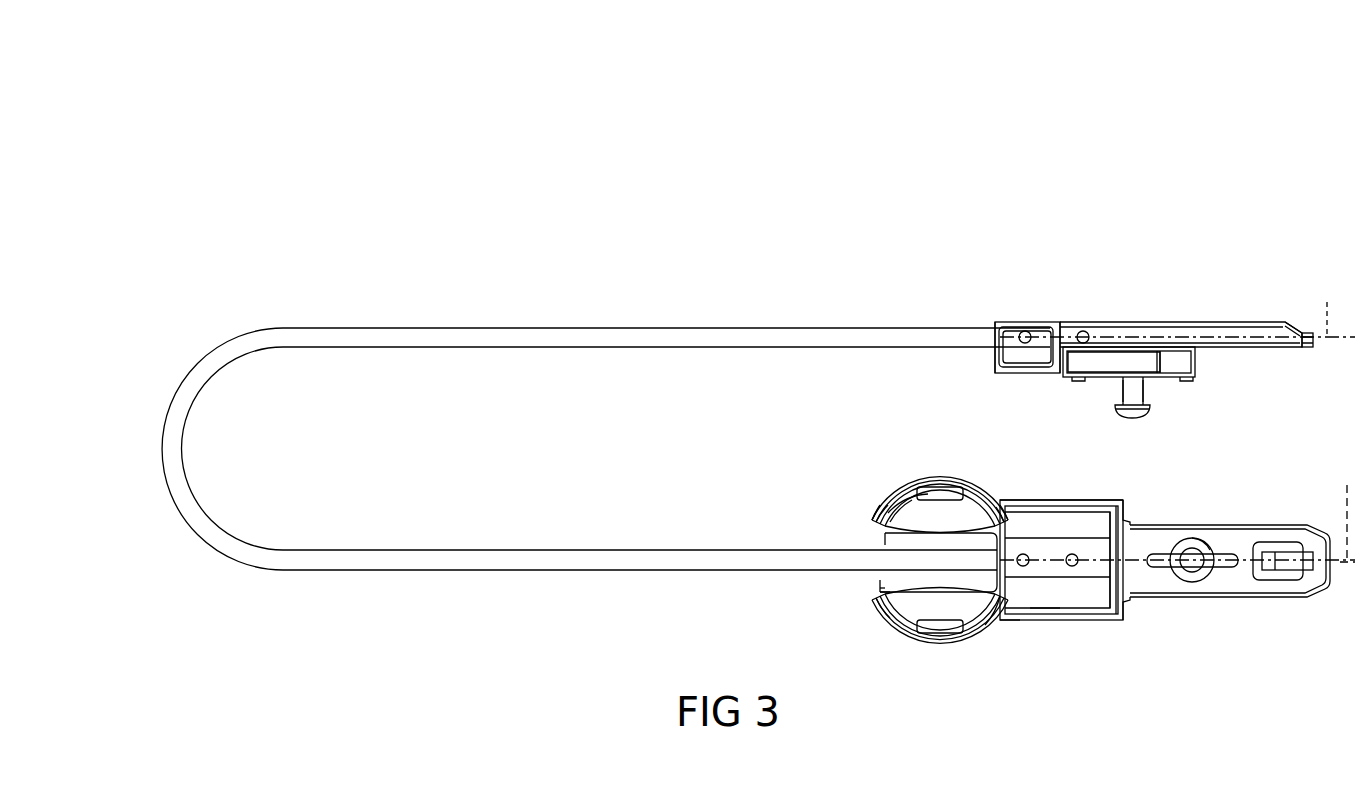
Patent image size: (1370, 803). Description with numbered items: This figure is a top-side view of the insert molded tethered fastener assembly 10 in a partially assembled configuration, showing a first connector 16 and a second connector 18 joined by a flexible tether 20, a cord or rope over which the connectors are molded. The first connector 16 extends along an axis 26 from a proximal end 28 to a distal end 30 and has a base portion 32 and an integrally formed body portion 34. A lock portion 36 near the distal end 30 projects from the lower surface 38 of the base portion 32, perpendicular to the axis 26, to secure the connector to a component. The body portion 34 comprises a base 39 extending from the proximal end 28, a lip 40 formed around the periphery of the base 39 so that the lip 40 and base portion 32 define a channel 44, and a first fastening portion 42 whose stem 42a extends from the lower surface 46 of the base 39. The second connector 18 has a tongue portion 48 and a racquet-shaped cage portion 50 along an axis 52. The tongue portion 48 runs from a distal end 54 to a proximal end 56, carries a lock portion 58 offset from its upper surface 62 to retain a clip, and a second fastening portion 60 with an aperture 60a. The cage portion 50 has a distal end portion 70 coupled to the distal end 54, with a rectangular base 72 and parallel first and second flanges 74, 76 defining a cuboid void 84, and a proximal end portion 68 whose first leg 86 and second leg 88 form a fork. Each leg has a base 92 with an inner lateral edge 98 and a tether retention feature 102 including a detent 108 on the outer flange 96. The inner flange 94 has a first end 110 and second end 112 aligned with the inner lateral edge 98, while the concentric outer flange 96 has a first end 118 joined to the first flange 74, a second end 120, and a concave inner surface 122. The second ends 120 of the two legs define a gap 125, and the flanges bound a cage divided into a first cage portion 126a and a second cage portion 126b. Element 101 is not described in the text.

The tethered fastener assembly 10 is at (1100, 208).
The first connector 16 is at (1148, 341).
The second connector 18 is at (1056, 566).
The tether 20 is at (227, 575).
The axis 26 is at (1333, 297).
The proximal end 28 is at (992, 358).
The distal end 30 is at (1315, 341).
The base portion 32 is at (1238, 330).
The body portion 34 is at (1100, 372).
The lock portion 36 is at (1290, 348).
The lower surface 38 is at (1303, 350).
The base 39 is at (1113, 357).
The lip 40 is at (1165, 365).
The first fastening portion 42 is at (1143, 418).
The stem 42a is at (1145, 397).
The channel 44 is at (1192, 357).
The lower surface 46 is at (1148, 388).
The tongue portion 48 is at (1242, 568).
The cage portion 50 is at (1003, 655).
The axis 52 is at (1336, 480).
The distal end 54 is at (1130, 520).
The proximal end 56 is at (1330, 538).
The lock portion 58 is at (1275, 552).
The second fastening portion 60 is at (1200, 583).
The aperture 60a is at (1199, 540).
The upper surface 62 is at (1248, 551).
The proximal end portion 68 is at (934, 459).
The distal end portion 70 is at (1177, 593).
The base 72 is at (1078, 600).
The first flange 74 is at (1045, 600).
The second flange 76 is at (1070, 500).
The void 84 is at (1035, 600).
The first leg 86 is at (917, 646).
The second leg 88 is at (846, 460).
The base 92 is at (885, 532).
The inner flange 94 is at (888, 505).
The outer flange 96 is at (915, 485).
The inner lateral edge 98 is at (900, 578).
The lower jaw layer 101 is at (882, 622).
The tether retention feature 102 is at (950, 634).
The detent 108 is at (942, 488).
The first end 110 is at (1003, 499).
The second end 112 is at (900, 532).
The first end 118 is at (1003, 500).
The second end 120 is at (875, 515).
The inner surface 122 is at (975, 642).
The gap 125 is at (885, 584).
The first cage portion 126a is at (880, 596).
The second cage portion 126b is at (900, 490).